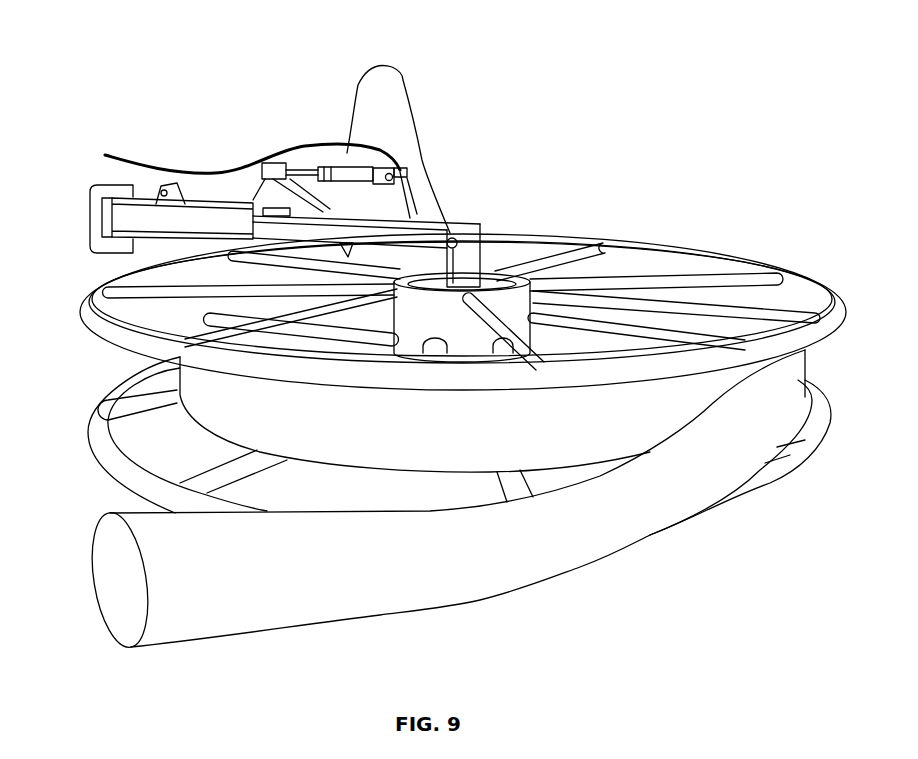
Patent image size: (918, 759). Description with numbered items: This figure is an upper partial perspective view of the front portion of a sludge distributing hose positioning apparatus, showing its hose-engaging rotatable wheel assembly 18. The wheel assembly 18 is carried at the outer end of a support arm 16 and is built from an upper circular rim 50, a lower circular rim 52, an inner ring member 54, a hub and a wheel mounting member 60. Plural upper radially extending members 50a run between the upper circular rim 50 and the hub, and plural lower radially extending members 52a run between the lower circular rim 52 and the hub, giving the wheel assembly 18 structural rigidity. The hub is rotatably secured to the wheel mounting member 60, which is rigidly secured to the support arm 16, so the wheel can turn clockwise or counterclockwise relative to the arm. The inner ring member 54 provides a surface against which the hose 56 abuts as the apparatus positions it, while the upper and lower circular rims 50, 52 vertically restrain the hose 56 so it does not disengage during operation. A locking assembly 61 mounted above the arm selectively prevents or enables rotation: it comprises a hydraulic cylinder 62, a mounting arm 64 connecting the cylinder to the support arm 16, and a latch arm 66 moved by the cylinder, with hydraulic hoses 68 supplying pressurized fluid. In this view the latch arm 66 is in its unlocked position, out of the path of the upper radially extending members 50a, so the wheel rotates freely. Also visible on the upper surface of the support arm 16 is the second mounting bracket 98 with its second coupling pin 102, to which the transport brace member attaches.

The support arm 16 is at (202, 222).
The wheel assembly 18 is at (708, 246).
The upper circular rim 50 is at (803, 281).
The upper radially extending members 50a is at (605, 247).
The lower circular rim 52 is at (773, 488).
The lower radially extending members 52a is at (507, 483).
The inner ring member 54 is at (463, 438).
The hose 56 is at (352, 576).
The wheel mounting member 60 is at (438, 234).
The locking assembly 61 is at (322, 130).
The hydraulic cylinder 62 is at (351, 150).
The mounting arm 64 is at (406, 212).
The latch arm 66 is at (297, 154).
The hydraulic hoses 68 is at (243, 163).
The second mounting bracket 98 is at (176, 183).
The second coupling pin 102 is at (160, 192).